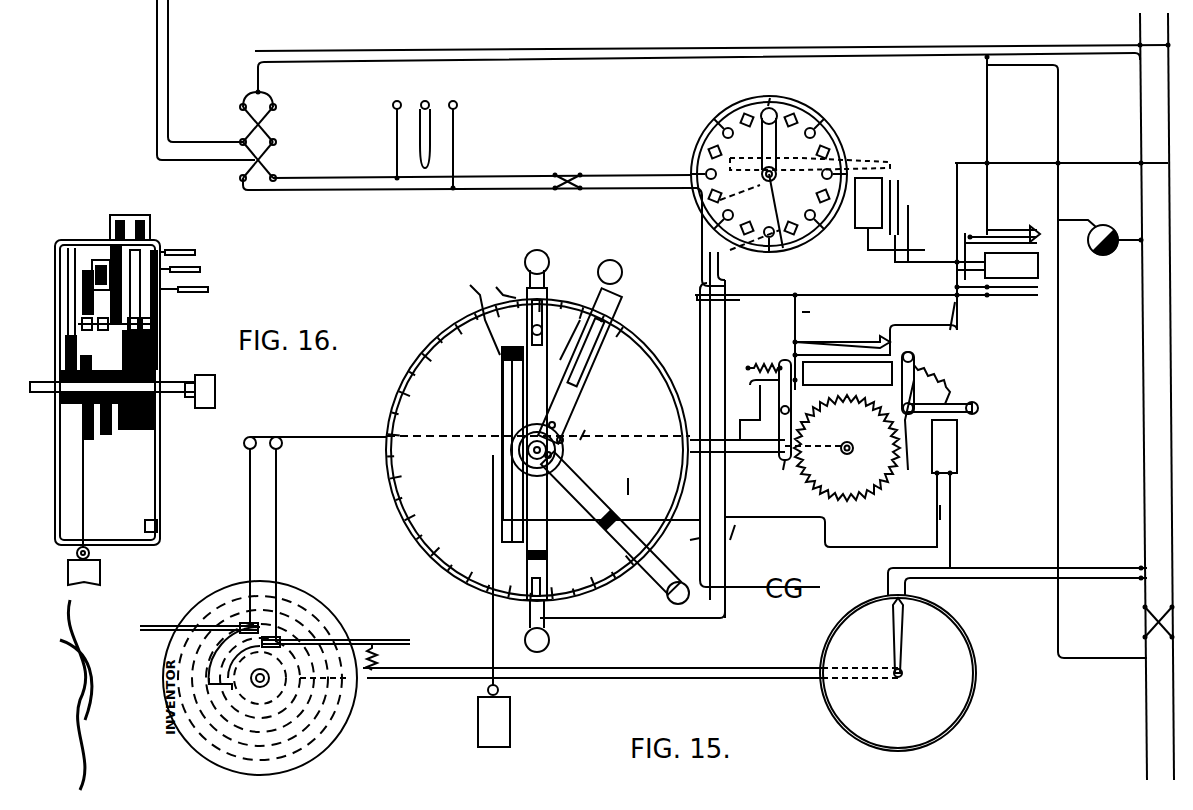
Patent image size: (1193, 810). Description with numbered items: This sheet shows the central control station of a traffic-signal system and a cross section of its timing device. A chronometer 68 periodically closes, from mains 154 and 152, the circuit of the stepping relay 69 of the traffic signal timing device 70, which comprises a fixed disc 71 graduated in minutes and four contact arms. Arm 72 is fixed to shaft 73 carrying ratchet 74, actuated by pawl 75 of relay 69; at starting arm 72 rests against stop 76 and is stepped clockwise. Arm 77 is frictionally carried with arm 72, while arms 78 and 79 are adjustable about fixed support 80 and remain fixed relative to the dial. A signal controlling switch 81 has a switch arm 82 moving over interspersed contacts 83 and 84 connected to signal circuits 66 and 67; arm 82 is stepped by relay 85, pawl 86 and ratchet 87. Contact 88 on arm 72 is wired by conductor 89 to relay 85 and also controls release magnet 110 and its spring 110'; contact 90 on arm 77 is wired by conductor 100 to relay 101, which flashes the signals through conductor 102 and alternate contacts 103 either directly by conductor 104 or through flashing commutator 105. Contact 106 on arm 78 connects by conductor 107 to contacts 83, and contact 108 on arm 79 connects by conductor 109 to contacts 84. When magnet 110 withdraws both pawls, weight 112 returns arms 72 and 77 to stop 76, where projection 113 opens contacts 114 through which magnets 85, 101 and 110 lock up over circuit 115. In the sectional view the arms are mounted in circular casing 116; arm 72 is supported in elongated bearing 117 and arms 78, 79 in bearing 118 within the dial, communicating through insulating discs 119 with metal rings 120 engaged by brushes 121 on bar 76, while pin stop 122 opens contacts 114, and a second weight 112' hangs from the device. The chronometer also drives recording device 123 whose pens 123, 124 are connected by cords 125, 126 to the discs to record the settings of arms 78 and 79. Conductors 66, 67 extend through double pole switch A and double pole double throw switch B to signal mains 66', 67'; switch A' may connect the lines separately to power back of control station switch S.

In FIG. 15, the signal circuit 66 is at (482, 163).
In FIG. 15, the signal circuit 67 is at (467, 197).
In FIG. 15, the signal main 66' is at (206, 129).
In FIG. 15, the signal main 67' is at (219, 172).
In FIG. 15, the chronometer 68 is at (970, 635).
In FIG. 15, the stepping relay 69 is at (957, 448).
In FIG. 15, the traffic signal timing device 70 is at (612, 590).
In FIG. 15, the fixed disc 71 is at (636, 335).
In FIG. 16, the fixed disc 71 is at (160, 478).
In FIG. 15, the stepping arm 72 is at (545, 262).
In FIG. 16, the stepping arm 72 is at (215, 385).
In FIG. 15, the shaft 73 is at (750, 452).
In FIG. 16, the shaft 73 is at (45, 385).
In FIG. 15, the ratchet 74 is at (851, 490).
In FIG. 15, the stepping pawl 75 is at (908, 470).
In FIG. 15, the stop 76 is at (785, 470).
In FIG. 16, the stop 76 is at (82, 298).
In FIG. 15, the arm 77 is at (616, 270).
In FIG. 16, the arm 77 is at (197, 289).
In FIG. 15, the arm 78 is at (627, 528).
In FIG. 16, the arm 78 is at (193, 269).
In FIG. 15, the arm 79 is at (566, 649).
In FIG. 16, the arm 79 is at (191, 251).
In FIG. 15, the fixed support 80 is at (572, 432).
In FIG. 16, the fixed support 80 is at (160, 335).
In FIG. 15, the signal controlling switch 81 is at (779, 174).
In FIG. 15, the switch arm 82 is at (776, 140).
In FIG. 15, the contacts 83 is at (715, 130).
In FIG. 15, the contacts 84 is at (722, 110).
In FIG. 15, the stepping relay 85 is at (885, 195).
In FIG. 15, the pawl 86 is at (848, 160).
In FIG. 15, the ratchet 87 is at (712, 215).
In FIG. 15, the contact 88 is at (555, 325).
In FIG. 16, the contact 88 is at (75, 262).
In FIG. 15, the conductor 89 is at (718, 310).
In FIG. 15, the contact 90 is at (570, 372).
In FIG. 15, the conductor 100 is at (826, 342).
In FIG. 15, the relay 101 is at (997, 265).
In FIG. 15, the conductor 102 is at (926, 233).
In FIG. 15, the alternate contacts 103 is at (1020, 230).
In FIG. 15, the conductor 104 is at (987, 130).
In FIG. 15, the flashing commutator 105 is at (1100, 222).
In FIG. 15, the contact 106 is at (686, 542).
In FIG. 16, the contact 106 is at (92, 288).
In FIG. 15, the conductor 107 is at (712, 328).
In FIG. 15, the contact 108 is at (530, 605).
In FIG. 16, the contact 108 is at (101, 283).
In FIG. 15, the conductor 109 is at (725, 345).
In FIG. 15, the release magnet 110 is at (847, 373).
In FIG. 15, the spring 110' is at (755, 402).
In FIG. 15, the weight 112 is at (516, 601).
In FIG. 16, the weight 112' is at (64, 512).
In FIG. 15, the projection 113 is at (703, 265).
In FIG. 15, the contacts 114 is at (502, 390).
In FIG. 16, the contacts 114 is at (78, 324).
In FIG. 15, the locking circuit 115 is at (809, 444).
In FIG. 16, the circular casing 116 is at (68, 240).
In FIG. 16, the elongated bearing 117 is at (55, 400).
In FIG. 16, the bearing 118 is at (160, 428).
In FIG. 16, the insulating discs 119 is at (110, 450).
In FIG. 16, the metal rings 120 is at (138, 450).
In FIG. 16, the brushes 121 is at (158, 325).
In FIG. 16, the pin stop 122 is at (65, 340).
In FIG. 15, the recording device 123 is at (235, 595).
In FIG. 15, the recording pen 124 is at (310, 640).
In FIG. 15, the cord 125 is at (250, 510).
In FIG. 16, the cord 125 is at (128, 222).
In FIG. 15, the cord 126 is at (276, 530).
In FIG. 16, the cord 126 is at (150, 230).
In FIG. 15, the conductor 152 is at (1141, 300).
In FIG. 15, the main 154 is at (1141, 323).
In FIG. 15, the double pole switch A is at (568, 162).
In FIG. 15, the single pole double throw switch A' is at (441, 146).
In FIG. 15, the double pole double throw switch B is at (275, 136).
In FIG. 15, the control station switch S is at (1143, 622).